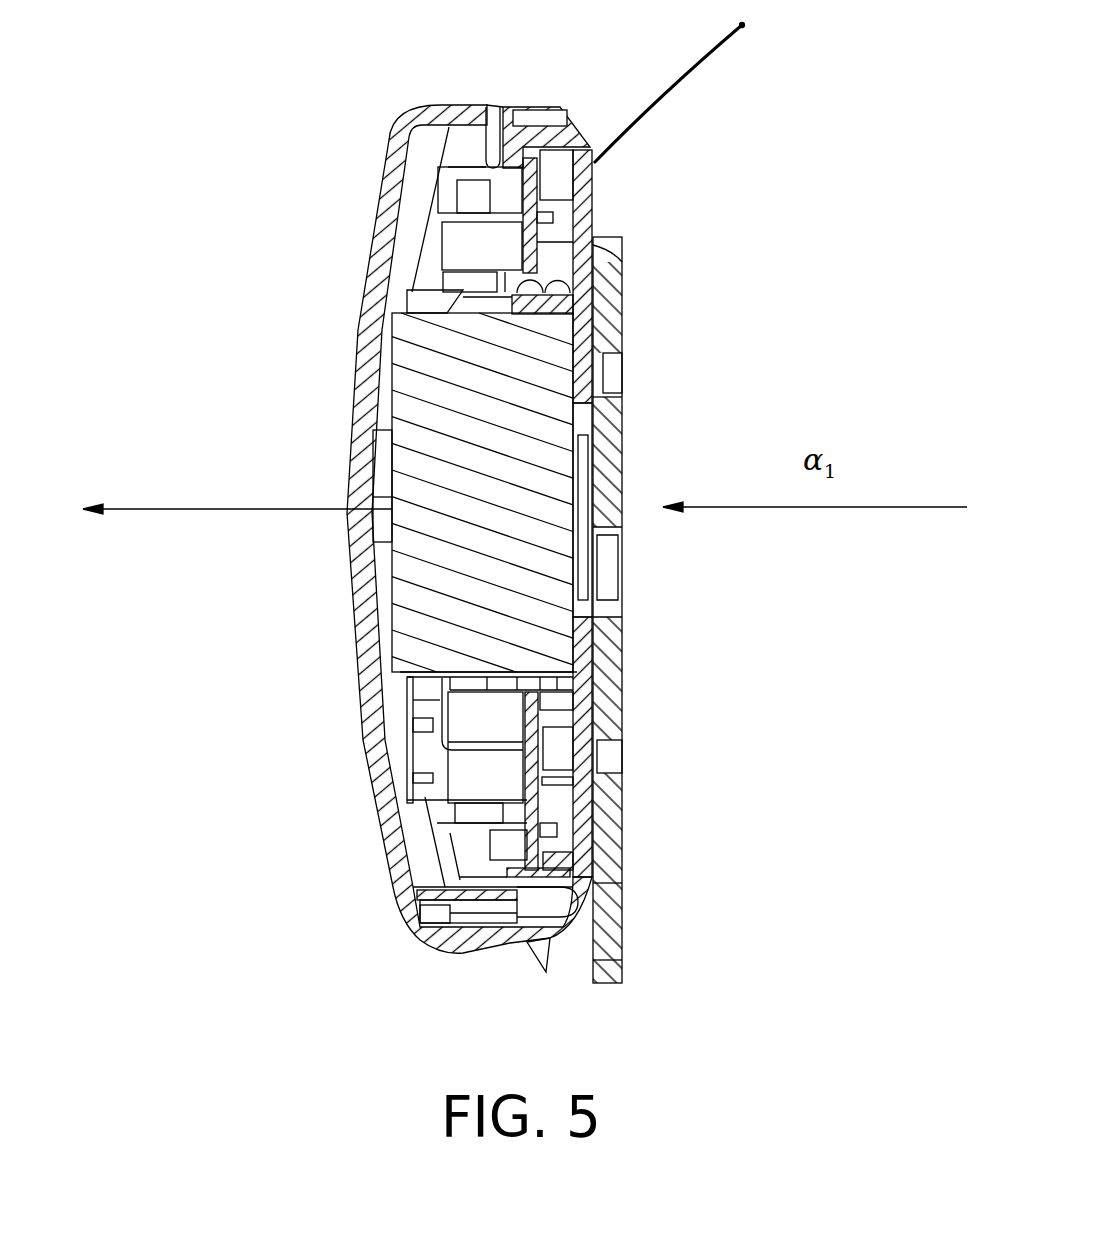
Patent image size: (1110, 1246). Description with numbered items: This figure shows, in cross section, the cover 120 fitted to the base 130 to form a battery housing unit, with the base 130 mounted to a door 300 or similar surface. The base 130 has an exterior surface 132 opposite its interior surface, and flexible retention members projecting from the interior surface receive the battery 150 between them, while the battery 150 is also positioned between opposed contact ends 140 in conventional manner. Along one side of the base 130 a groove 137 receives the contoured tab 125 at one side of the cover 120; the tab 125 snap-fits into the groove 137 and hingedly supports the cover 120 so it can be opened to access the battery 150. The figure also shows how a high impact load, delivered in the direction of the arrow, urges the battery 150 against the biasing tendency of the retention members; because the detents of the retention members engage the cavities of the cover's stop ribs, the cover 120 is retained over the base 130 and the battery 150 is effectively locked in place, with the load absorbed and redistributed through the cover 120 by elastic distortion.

The cover 120 is at (363, 725).
The contoured tab 125 is at (509, 128).
The base 130 is at (600, 228).
The exterior surface 132 is at (696, 84).
The groove 137 is at (548, 112).
The contact ends 140 is at (468, 243).
The battery 150 is at (416, 362).
The door 300 is at (607, 828).